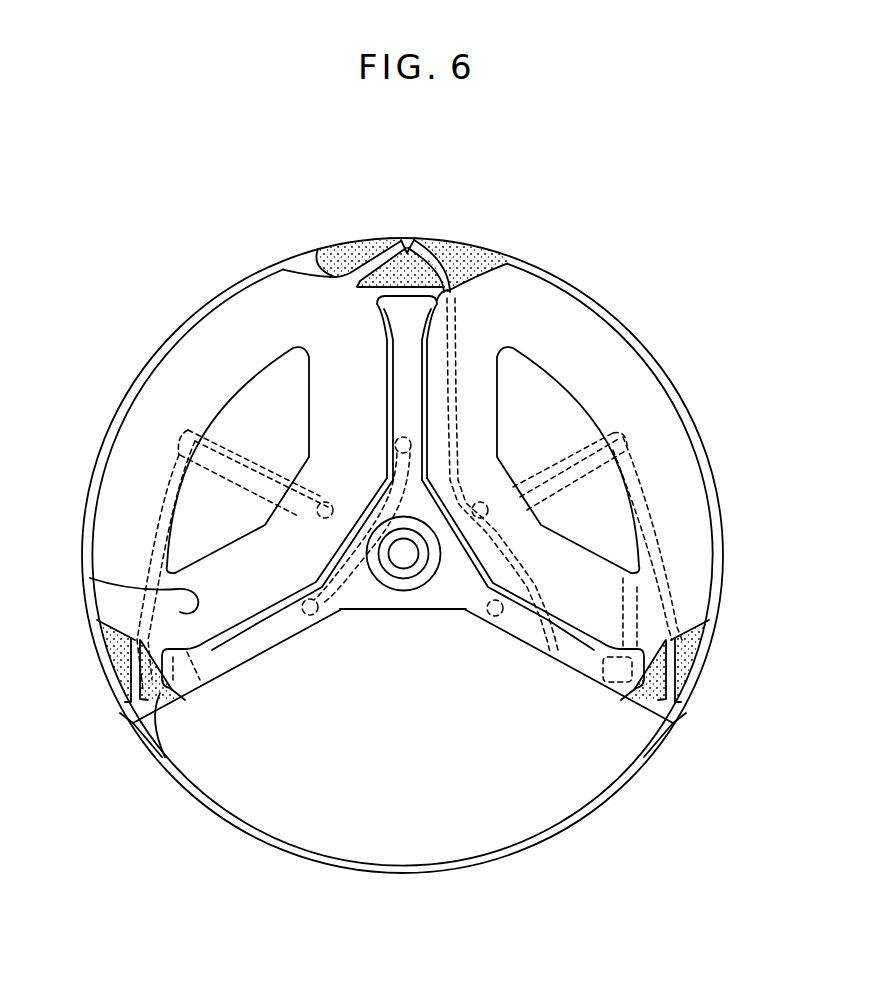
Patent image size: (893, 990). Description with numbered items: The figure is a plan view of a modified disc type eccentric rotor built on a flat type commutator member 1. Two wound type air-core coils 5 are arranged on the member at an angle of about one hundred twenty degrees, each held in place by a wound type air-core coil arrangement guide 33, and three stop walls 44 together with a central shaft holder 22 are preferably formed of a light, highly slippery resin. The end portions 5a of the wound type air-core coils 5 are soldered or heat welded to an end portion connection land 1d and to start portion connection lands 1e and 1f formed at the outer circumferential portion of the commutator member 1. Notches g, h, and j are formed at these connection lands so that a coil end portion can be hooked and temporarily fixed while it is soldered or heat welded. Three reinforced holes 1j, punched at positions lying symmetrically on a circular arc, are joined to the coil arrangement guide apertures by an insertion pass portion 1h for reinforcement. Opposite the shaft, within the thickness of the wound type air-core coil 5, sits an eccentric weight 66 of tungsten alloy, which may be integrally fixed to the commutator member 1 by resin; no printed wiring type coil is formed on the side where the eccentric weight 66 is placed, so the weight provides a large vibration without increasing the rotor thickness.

The commutator member 1 is at (178, 330).
The end portion connection land 1d is at (477, 258).
The start portion connection land 1e is at (700, 653).
The start portion connection land 1f is at (110, 688).
The insertion pass portion 1h is at (90, 579).
The reinforced hole 1j is at (166, 752).
The wound type air-core coil 5 is at (240, 307).
The end portion of wound type air-core coil 5a is at (368, 252).
The shaft holder 22 is at (367, 590).
The wound type air-core coil arrangement guide 33 is at (190, 503).
The stop wall 44 is at (402, 383).
The eccentric weight 66 is at (440, 855).
The notch g is at (408, 233).
The notch h is at (681, 714).
The notch j is at (125, 714).